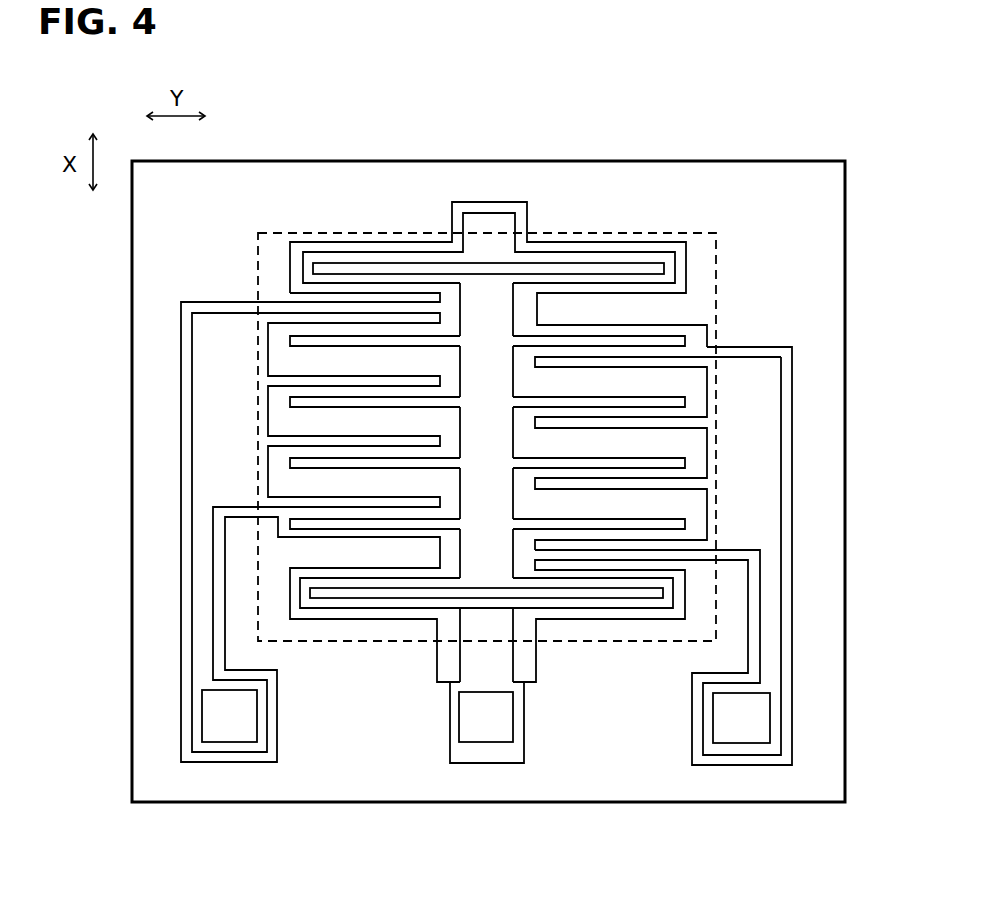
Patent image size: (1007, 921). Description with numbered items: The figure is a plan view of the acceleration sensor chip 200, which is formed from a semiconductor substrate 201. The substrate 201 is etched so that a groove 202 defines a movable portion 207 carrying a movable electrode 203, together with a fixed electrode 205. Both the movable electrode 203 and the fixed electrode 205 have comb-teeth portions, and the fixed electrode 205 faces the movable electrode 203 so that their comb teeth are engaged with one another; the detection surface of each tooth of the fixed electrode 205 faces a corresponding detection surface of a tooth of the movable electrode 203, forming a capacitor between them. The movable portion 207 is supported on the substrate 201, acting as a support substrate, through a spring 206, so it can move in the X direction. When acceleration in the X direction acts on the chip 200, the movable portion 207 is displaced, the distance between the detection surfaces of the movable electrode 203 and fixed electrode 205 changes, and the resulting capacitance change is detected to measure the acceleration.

The acceleration sensor chip 200 is at (303, 160).
The semiconductor substrate 201 is at (728, 162).
The groove 202 is at (787, 587).
The movable electrode 203 is at (638, 340).
The fixed electrode 205 is at (637, 358).
The spring 206 is at (595, 258).
The movable portion 207 is at (485, 313).